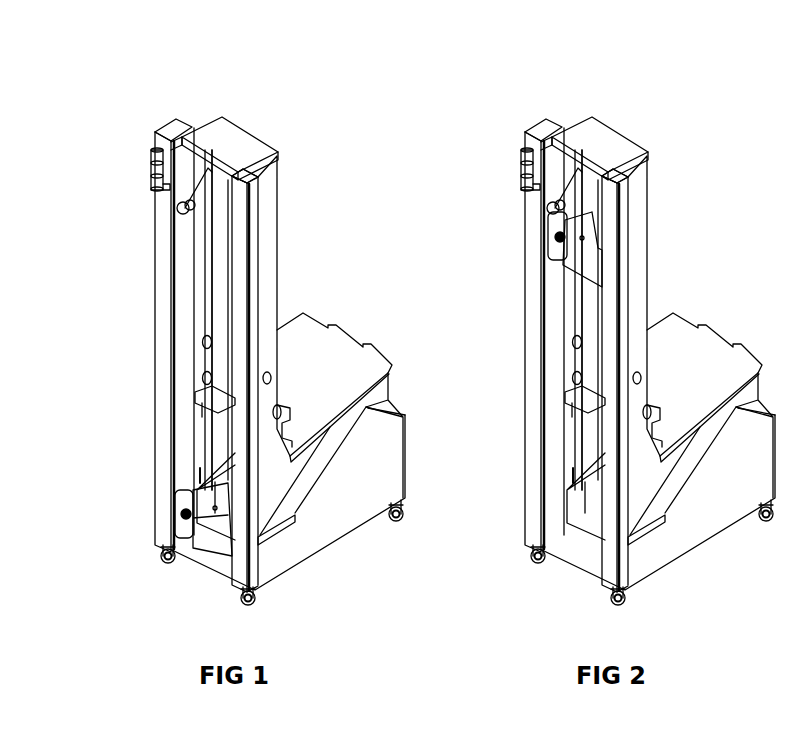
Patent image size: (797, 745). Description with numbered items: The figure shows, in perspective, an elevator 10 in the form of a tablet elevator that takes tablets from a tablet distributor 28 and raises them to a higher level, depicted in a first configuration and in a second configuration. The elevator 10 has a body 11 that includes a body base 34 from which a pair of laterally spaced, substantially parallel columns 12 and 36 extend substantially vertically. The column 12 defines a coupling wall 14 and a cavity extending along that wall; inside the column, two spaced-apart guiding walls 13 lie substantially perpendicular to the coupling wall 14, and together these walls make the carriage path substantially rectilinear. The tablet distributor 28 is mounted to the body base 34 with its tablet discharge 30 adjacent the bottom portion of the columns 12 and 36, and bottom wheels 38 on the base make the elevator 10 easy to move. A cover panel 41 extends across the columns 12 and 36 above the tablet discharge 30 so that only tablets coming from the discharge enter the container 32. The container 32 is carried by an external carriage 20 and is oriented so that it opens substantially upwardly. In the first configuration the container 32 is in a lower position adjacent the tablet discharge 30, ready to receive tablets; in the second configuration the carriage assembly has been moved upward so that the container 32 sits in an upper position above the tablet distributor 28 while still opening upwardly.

In FIG. 1, the elevator 10 is at (148, 92).
In FIG. 2, the elevator 10 is at (531, 104).
In FIG. 1, the body 11 is at (264, 265).
In FIG. 2, the body 11 is at (669, 355).
In FIG. 1, the column 12 is at (168, 132).
In FIG. 2, the column 12 is at (488, 118).
In FIG. 1, the guiding walls 13 is at (170, 218).
In FIG. 2, the guiding walls 13 is at (499, 340).
In FIG. 1, the coupling wall 14 is at (183, 251).
In FIG. 2, the coupling wall 14 is at (542, 320).
In FIG. 1, the external carriage 20 is at (173, 512).
In FIG. 2, the external carriage 20 is at (501, 233).
In FIG. 1, the tablet distributor 28 is at (347, 323).
In FIG. 2, the tablet distributor 28 is at (700, 391).
In FIG. 1, the tablet discharge 30 is at (227, 480).
In FIG. 2, the tablet discharge 30 is at (522, 320).
In FIG. 1, the container 32 is at (215, 538).
In FIG. 2, the container 32 is at (532, 252).
In FIG. 1, the body base 34 is at (323, 520).
In FIG. 2, the body base 34 is at (658, 499).
In FIG. 1, the column 36 is at (247, 168).
In FIG. 2, the column 36 is at (664, 115).
In FIG. 1, the bottom wheels 38 is at (167, 562).
In FIG. 2, the bottom wheels 38 is at (662, 561).
In FIG. 1, the cover panel 41 is at (228, 136).
In FIG. 2, the cover panel 41 is at (594, 129).